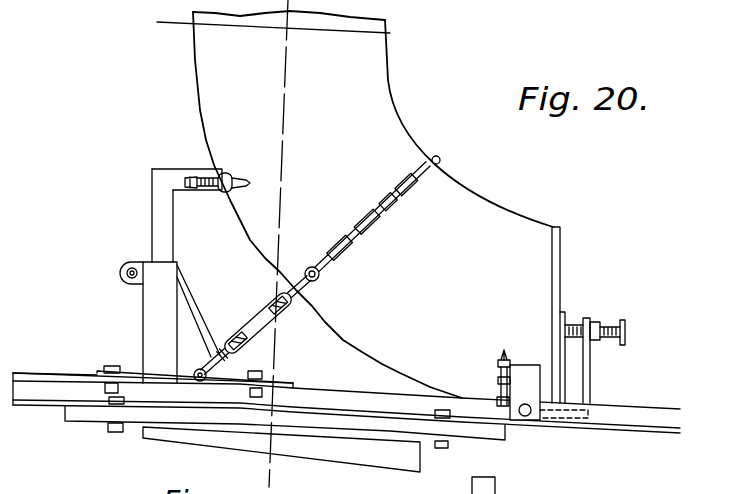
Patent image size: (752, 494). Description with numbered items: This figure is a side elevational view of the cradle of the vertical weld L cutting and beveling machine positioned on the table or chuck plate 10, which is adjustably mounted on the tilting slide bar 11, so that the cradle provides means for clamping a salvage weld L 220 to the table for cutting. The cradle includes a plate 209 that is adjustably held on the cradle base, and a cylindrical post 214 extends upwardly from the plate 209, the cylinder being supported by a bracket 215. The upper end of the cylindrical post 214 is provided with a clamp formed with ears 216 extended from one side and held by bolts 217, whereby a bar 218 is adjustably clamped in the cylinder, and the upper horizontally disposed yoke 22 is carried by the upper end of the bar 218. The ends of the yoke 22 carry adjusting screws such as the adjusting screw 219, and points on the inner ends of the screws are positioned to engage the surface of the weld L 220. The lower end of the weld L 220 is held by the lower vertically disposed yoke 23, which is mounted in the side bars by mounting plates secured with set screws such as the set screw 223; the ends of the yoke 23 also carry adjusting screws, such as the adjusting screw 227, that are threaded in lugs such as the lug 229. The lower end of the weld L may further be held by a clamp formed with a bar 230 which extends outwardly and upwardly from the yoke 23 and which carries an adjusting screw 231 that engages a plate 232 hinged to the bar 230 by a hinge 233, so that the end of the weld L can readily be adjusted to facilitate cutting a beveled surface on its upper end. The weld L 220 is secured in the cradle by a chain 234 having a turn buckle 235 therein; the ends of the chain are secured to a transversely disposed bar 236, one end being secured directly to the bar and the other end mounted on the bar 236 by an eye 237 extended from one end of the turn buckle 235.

The table or chuck plate 10 is at (484, 452).
The tilting slide bar 11 is at (363, 466).
The upper horizontally disposed yoke 22 is at (182, 173).
The lower vertically disposed yoke 23 is at (532, 423).
The plate 209 is at (275, 384).
The cylindrical post 214 is at (150, 326).
The bracket 215 is at (192, 304).
The ears 216 is at (122, 265).
The bolts 217 is at (128, 283).
The bar 218 is at (160, 227).
The adjusting screw 219 is at (206, 192).
The weld L 220 is at (503, 218).
The set screw 223 is at (518, 421).
The adjusting screw 227 is at (503, 353).
The lug 229 is at (497, 368).
The bar 230 is at (586, 380).
The adjusting screw 231 is at (611, 324).
The plate 232 is at (560, 312).
The hinge 233 is at (578, 411).
The chain 234 is at (432, 162).
The turn buckle 235 is at (270, 334).
The transversely disposed bar 236 is at (230, 383).
The eye 237 is at (200, 370).